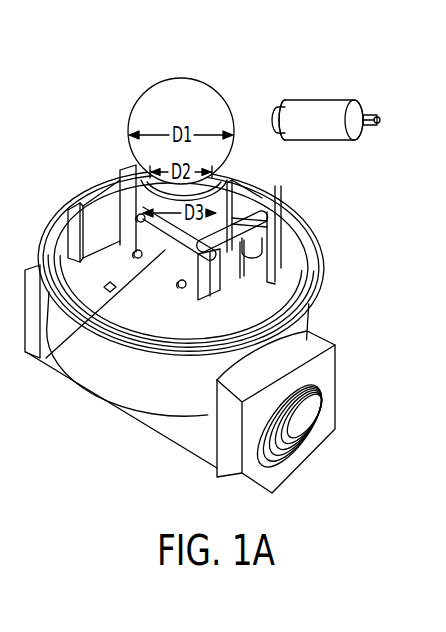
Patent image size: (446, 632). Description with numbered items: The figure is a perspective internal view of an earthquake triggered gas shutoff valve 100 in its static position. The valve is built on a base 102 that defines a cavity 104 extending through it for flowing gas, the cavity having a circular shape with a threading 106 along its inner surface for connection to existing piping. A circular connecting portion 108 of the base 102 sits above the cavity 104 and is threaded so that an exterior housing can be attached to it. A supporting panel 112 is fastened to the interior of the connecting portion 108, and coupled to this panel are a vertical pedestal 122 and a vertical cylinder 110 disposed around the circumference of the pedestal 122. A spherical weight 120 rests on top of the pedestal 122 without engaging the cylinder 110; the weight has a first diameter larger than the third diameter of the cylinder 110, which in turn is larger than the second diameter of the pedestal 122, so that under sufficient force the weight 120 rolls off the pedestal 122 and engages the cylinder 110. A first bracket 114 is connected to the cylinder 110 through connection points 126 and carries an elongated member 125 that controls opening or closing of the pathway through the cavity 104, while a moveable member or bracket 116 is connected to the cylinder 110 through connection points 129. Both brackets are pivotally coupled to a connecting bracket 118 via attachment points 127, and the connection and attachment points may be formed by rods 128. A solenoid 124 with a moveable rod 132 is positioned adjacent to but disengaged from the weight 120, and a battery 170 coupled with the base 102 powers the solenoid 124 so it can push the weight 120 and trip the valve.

The shutoff valve 100 is at (68, 97).
The base 102 is at (328, 368).
The cavity 104 is at (261, 458).
The threading 106 is at (306, 443).
The connecting portion 108 is at (325, 272).
The vertical cylinder 110 is at (226, 186).
The supporting panel 112 is at (85, 275).
The first bracket 114 is at (270, 202).
The moveable member or bracket 116 is at (107, 300).
The connecting bracket 118 is at (193, 298).
The weight 120 is at (223, 110).
The vertical pedestal 122 is at (130, 176).
The solenoid 124 is at (326, 110).
The elongated member 125 is at (265, 257).
The connection points 126 is at (137, 216).
The attachment points 127 is at (178, 285).
The rods 128 is at (253, 214).
The connection points 129 is at (135, 257).
The moveable rod 132 is at (380, 122).
The battery 170 is at (52, 348).